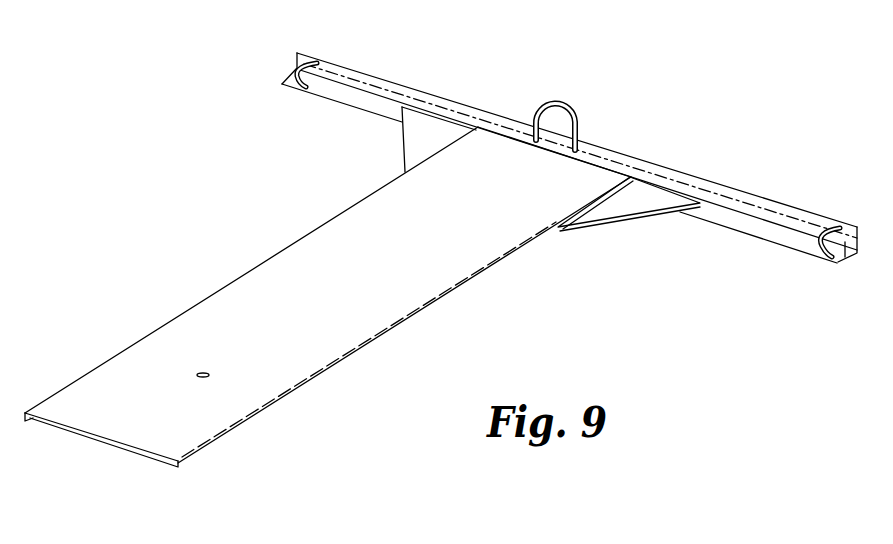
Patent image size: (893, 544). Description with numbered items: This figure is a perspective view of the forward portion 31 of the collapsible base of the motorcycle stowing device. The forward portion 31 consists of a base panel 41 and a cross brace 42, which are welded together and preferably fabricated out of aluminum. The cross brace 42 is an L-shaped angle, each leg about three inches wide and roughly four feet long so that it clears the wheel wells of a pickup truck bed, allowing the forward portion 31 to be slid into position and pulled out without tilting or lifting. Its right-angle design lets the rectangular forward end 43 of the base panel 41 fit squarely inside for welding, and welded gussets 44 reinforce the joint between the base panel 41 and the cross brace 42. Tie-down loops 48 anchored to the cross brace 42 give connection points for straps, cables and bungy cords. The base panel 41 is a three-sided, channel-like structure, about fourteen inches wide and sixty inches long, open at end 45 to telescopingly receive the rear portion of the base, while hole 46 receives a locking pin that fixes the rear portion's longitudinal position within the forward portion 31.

The forward portion 31 is at (280, 194).
The base panel 41 is at (368, 318).
The cross brace 42 is at (700, 187).
The rectangular forward end 43 is at (589, 159).
The gussets 44 is at (422, 132).
The open end 45 is at (135, 448).
The hole 46 is at (202, 372).
The tie-down loops 48 is at (298, 75).